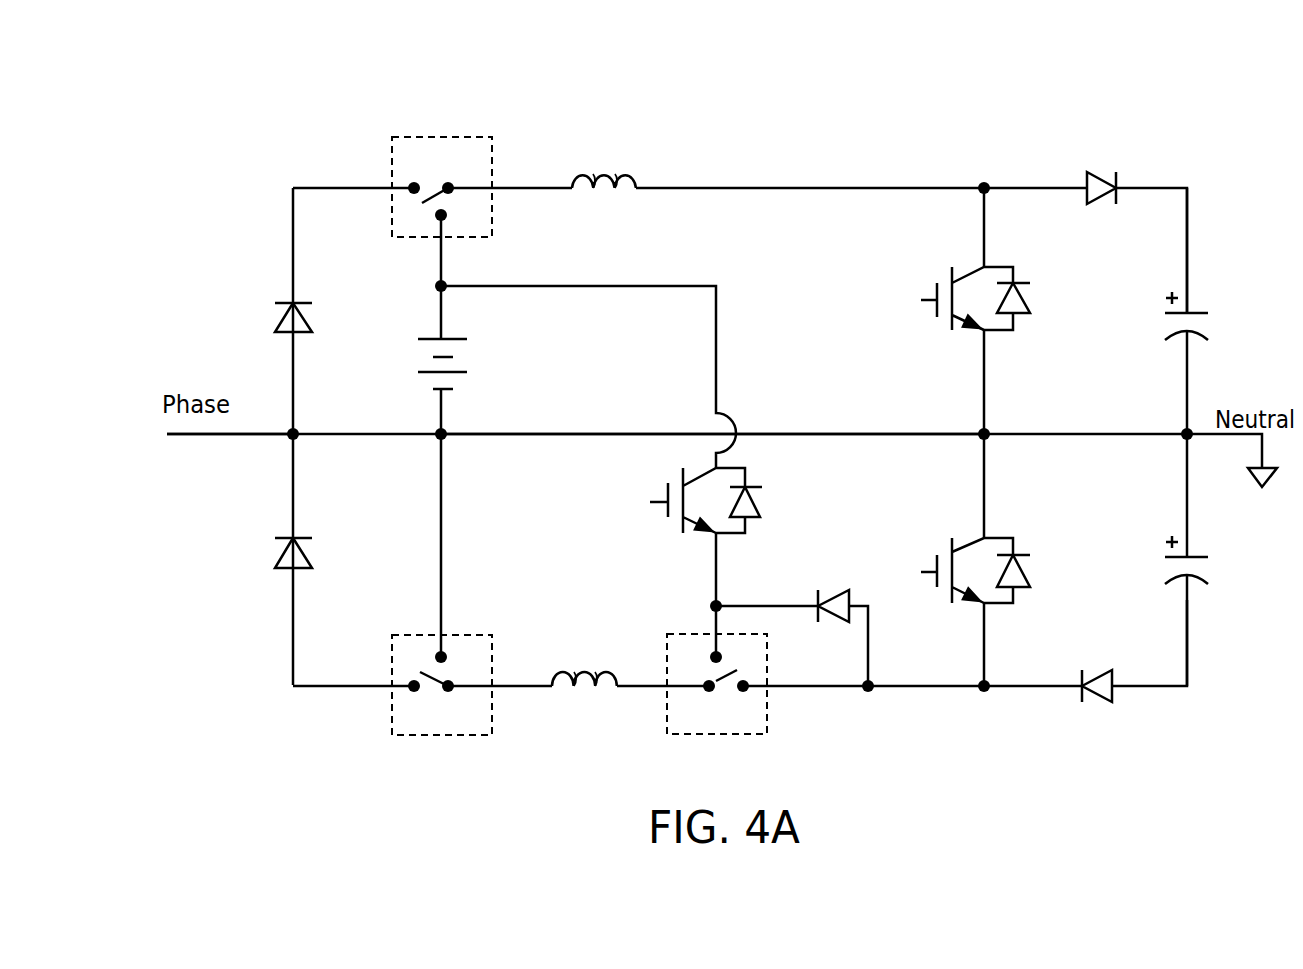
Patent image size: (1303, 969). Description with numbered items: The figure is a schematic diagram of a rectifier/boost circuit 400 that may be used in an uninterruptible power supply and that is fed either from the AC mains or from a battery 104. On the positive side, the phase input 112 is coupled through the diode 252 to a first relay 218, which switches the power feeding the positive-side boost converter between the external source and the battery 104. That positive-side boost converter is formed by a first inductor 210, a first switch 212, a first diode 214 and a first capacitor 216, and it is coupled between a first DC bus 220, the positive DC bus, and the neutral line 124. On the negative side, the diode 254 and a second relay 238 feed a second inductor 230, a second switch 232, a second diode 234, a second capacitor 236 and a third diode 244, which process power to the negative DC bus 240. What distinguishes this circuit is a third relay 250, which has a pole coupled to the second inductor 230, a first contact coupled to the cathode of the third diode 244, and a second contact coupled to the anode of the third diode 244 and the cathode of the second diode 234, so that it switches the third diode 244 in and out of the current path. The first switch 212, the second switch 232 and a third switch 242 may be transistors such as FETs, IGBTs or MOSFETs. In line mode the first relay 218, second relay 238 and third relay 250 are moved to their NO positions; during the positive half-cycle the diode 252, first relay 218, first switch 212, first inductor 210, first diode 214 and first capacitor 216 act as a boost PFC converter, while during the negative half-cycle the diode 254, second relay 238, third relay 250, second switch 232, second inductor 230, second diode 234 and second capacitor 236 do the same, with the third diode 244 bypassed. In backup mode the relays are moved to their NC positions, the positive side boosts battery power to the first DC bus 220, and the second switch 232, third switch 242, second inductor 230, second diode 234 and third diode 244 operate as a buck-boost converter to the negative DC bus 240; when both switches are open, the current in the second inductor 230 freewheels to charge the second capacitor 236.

The rectifier/boost circuit 400 is at (882, 115).
The first relay 218 is at (453, 137).
The first inductor 210 is at (622, 160).
The first diode 214 is at (1117, 178).
The first DC bus 220 is at (1187, 213).
The first switch 212 is at (950, 272).
The first capacitor 216 is at (1207, 333).
The diode 252 is at (292, 302).
The battery 104 is at (458, 339).
The neutral line 124 is at (548, 434).
The third switch 242 is at (745, 468).
The phase input 112 is at (228, 436).
The second switch 232 is at (993, 540).
The second capacitor 236 is at (1207, 573).
The diode 254 is at (287, 568).
The third diode 244 is at (818, 617).
The negative DC bus 240 is at (1187, 655).
The second inductor 230 is at (574, 690).
The second relay 238 is at (437, 735).
The third relay 250 is at (712, 734).
The second diode 234 is at (1082, 702).